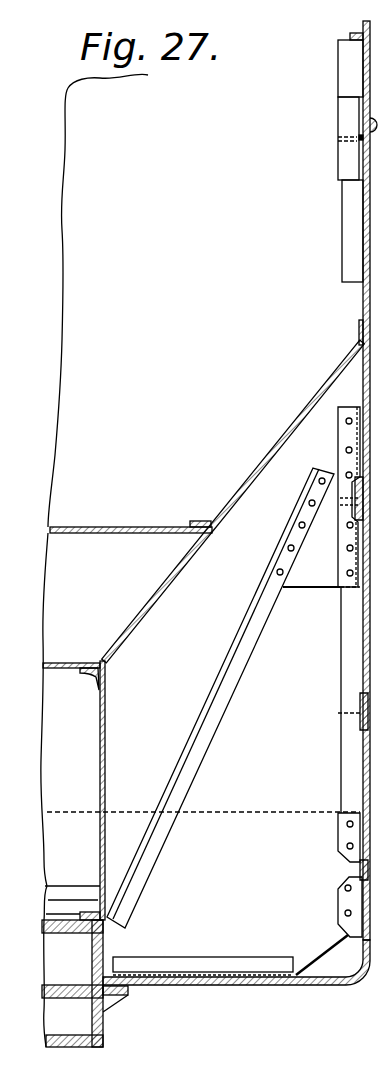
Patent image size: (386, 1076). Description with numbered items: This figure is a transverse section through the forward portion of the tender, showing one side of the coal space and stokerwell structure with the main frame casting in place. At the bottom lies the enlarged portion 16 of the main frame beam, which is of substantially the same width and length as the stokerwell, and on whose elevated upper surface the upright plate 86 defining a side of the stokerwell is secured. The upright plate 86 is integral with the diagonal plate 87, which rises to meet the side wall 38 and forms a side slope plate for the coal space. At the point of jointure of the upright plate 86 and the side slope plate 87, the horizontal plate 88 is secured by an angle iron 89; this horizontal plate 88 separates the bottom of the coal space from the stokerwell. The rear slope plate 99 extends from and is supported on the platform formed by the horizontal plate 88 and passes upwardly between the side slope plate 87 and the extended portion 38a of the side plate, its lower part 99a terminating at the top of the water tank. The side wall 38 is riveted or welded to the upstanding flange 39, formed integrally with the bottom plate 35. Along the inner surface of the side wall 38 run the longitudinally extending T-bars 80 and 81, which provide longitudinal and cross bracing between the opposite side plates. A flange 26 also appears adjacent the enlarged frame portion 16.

The rear slope plate 99 is at (132, 137).
The lower part of rear slope plate 99a is at (80, 527).
The diagonal plate 87 is at (253, 478).
The extended portion of side plate 38a is at (363, 218).
The side wall 38 is at (363, 654).
The T-bar 80 is at (362, 502).
The T-bar 81 is at (363, 720).
The upstanding flange 39 is at (347, 892).
The bottom plate 35 is at (262, 978).
The flange 26 is at (128, 992).
The enlarged portion of main frame beam 16 is at (102, 946).
The upright plate 86 is at (105, 760).
The horizontal plate 88 is at (60, 663).
The angle iron 89 is at (94, 673).